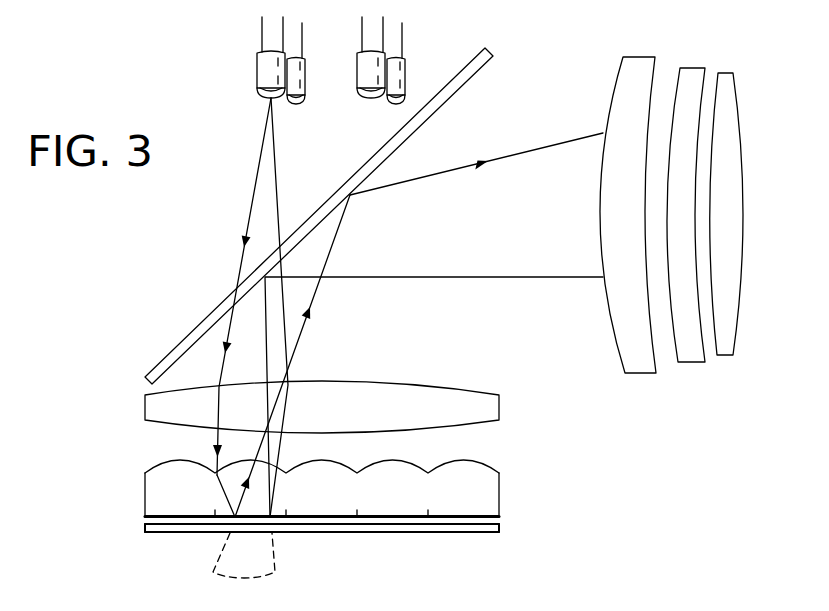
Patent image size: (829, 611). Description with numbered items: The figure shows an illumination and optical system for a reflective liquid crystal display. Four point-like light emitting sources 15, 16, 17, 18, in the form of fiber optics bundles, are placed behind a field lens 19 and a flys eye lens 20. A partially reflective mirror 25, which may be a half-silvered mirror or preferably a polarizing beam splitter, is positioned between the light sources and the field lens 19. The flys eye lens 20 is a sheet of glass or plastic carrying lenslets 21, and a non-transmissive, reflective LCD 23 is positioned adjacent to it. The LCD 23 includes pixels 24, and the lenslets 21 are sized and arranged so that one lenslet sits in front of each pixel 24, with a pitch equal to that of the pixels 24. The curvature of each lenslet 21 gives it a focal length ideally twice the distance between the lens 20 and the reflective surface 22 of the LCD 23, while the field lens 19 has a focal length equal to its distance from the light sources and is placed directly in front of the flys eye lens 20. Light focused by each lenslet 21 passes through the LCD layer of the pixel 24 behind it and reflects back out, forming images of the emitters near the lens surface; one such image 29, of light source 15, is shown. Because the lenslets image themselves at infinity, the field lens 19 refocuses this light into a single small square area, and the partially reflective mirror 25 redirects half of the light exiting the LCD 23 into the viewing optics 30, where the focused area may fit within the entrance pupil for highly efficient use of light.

The light emitting source 15 is at (265, 72).
The light emitting source 16 is at (306, 75).
The light emitting source 17 is at (356, 73).
The light emitting source 18 is at (406, 76).
The field lens 19 is at (152, 405).
The flys eye lens 20 is at (470, 513).
The lenslets 21 is at (163, 463).
The reflective surface 22 is at (472, 533).
The reflective LCD 23 is at (500, 528).
The pixels 24 is at (388, 533).
The partially reflective mirror 25 is at (192, 340).
The image 29 is at (283, 356).
The viewing optics 30 is at (642, 374).